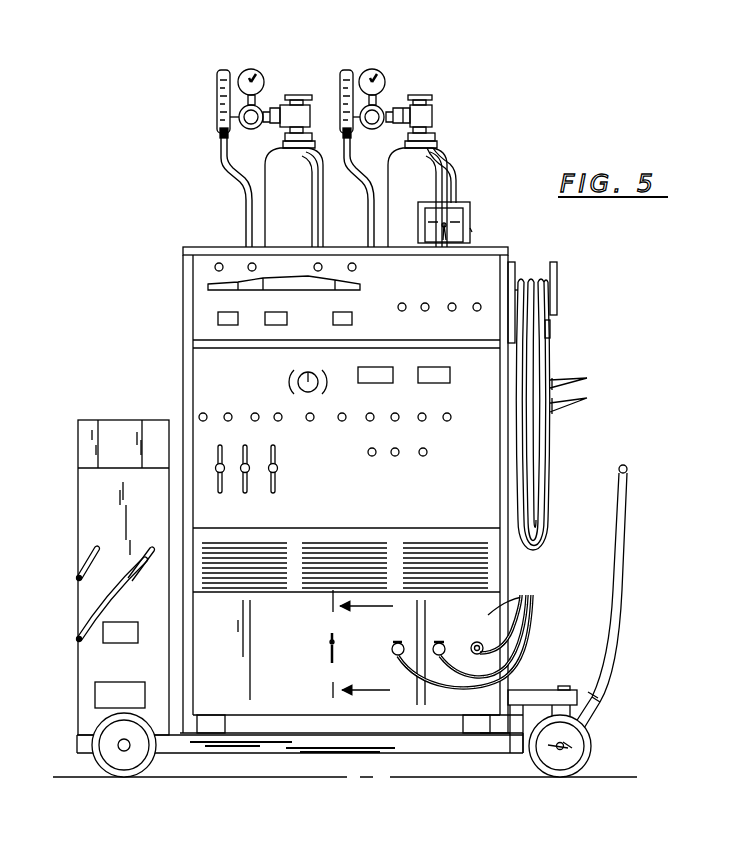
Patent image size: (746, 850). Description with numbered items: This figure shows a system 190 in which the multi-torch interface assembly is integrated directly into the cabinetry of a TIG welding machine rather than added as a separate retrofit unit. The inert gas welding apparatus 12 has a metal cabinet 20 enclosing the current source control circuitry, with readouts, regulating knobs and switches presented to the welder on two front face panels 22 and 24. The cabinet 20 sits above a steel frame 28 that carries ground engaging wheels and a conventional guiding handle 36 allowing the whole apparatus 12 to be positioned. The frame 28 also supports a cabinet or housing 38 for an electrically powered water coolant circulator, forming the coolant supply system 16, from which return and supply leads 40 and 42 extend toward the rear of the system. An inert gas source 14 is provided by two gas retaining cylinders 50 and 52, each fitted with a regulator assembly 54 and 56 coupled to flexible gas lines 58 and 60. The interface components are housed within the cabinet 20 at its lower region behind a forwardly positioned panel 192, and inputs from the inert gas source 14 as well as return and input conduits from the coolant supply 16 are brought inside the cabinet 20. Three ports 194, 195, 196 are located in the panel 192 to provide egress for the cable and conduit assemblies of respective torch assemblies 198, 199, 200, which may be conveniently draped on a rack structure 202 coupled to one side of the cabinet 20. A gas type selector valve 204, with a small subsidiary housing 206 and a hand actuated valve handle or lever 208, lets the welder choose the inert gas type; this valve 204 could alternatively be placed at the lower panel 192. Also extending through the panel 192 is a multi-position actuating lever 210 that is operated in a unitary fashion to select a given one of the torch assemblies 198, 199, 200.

The inert gas welding apparatus 12 is at (160, 320).
The inert gas source 14 is at (190, 117).
The coolant supply system 16 is at (70, 407).
The metal cabinet 20 is at (185, 383).
The front face panel 22 is at (412, 500).
The front face panel 24 is at (435, 292).
The steel frame 28 is at (322, 753).
The guiding handle 36 is at (628, 468).
The coolant circulator housing 38 is at (78, 515).
The coolant return lead 40 is at (80, 558).
The coolant supply lead 42 is at (83, 623).
The gas retaining cylinder 50 is at (287, 95).
The gas retaining cylinder 52 is at (420, 94).
The regulator assembly 54 is at (268, 128).
The regulator assembly 56 is at (389, 128).
The flexible gas line 58 is at (237, 193).
The flexible gas line 60 is at (349, 173).
The system 190 is at (563, 40).
The panel 192 is at (488, 615).
The port 194 is at (398, 643).
The port 195 is at (437, 641).
The port 196 is at (480, 642).
The torch assembly 198 is at (508, 687).
The torch assembly 199 is at (530, 646).
The torch assembly 200 is at (530, 624).
The rack structure 202 is at (558, 285).
The gas type selector valve 204 is at (474, 230).
The subsidiary housing 206 is at (472, 212).
The valve handle 208 is at (444, 222).
The multi-position actuating lever 210 is at (330, 657).